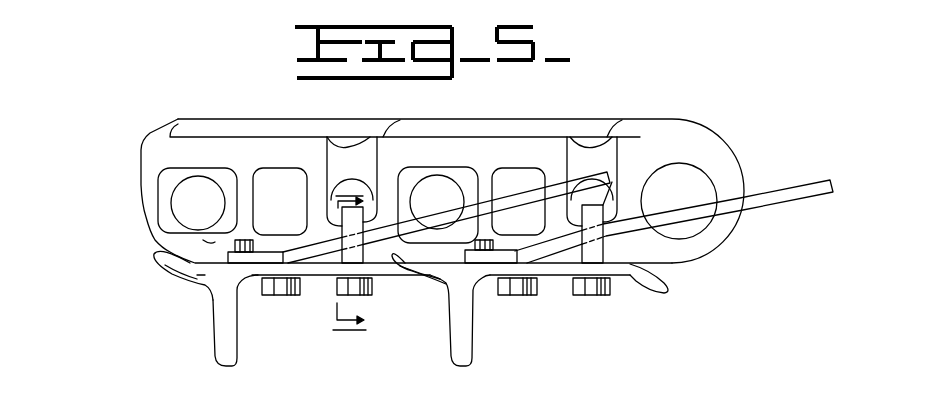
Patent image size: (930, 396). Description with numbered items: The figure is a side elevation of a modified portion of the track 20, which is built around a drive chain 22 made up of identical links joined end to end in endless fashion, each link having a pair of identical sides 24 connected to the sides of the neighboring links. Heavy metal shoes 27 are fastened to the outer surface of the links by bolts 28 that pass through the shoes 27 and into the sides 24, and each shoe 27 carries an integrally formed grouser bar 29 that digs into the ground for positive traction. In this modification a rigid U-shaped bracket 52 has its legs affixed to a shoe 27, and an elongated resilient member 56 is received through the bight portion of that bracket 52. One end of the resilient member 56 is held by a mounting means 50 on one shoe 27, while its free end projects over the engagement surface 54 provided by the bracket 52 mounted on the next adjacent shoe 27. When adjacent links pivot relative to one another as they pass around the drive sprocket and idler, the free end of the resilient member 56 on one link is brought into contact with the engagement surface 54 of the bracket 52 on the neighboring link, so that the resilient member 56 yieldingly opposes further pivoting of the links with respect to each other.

The track 20 is at (694, 98).
The drive chain 22 is at (141, 205).
The sides 24 is at (197, 145).
The shoes 27 is at (390, 312).
The bolts 28 is at (338, 294).
The grouser bar 29 is at (212, 350).
The mounting means 50 is at (243, 240).
The U-shaped bracket 52 is at (323, 200).
The engagement surface 54 is at (368, 200).
The elongated resilient member 56 is at (509, 198).